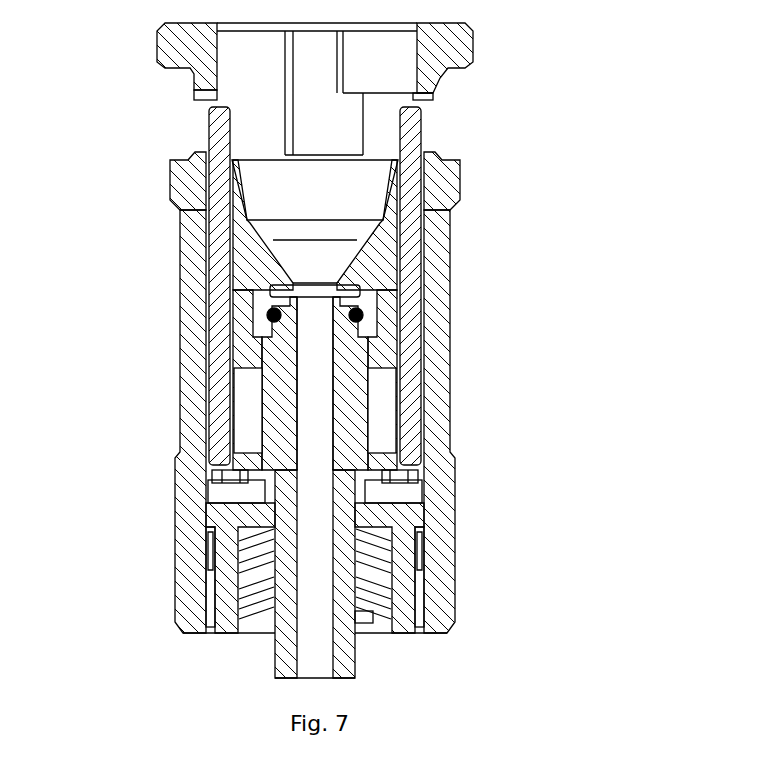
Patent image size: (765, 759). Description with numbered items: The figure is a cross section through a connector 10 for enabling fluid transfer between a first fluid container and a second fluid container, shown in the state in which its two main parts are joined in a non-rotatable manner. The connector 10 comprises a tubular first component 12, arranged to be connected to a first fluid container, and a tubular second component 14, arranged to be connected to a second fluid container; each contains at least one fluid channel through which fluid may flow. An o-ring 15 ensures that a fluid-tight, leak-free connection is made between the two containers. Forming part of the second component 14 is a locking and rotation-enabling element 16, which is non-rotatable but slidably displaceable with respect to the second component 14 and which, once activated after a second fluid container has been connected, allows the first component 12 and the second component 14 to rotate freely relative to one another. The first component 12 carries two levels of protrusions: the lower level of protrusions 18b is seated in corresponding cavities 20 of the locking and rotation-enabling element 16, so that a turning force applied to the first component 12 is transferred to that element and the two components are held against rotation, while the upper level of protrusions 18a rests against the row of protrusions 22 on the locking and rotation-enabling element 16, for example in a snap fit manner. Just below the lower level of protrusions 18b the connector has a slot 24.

The connector 10 is at (574, 153).
The first component 12 is at (411, 576).
The second component 14 is at (190, 175).
The o-ring 15 is at (266, 317).
The locking and rotation-enabling element 16 is at (200, 245).
The upper level of protrusions 18a is at (345, 357).
The lower level of protrusions 18b is at (352, 470).
The cavities 20 is at (412, 465).
The row of protrusions 22 is at (392, 353).
The slot 24 is at (410, 488).